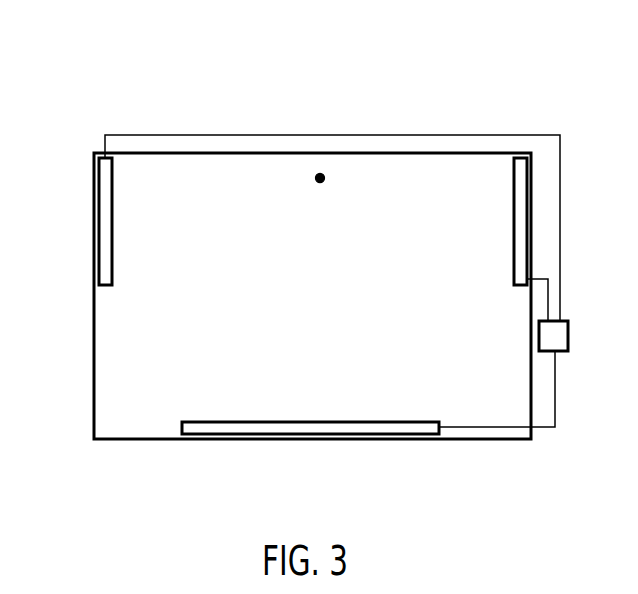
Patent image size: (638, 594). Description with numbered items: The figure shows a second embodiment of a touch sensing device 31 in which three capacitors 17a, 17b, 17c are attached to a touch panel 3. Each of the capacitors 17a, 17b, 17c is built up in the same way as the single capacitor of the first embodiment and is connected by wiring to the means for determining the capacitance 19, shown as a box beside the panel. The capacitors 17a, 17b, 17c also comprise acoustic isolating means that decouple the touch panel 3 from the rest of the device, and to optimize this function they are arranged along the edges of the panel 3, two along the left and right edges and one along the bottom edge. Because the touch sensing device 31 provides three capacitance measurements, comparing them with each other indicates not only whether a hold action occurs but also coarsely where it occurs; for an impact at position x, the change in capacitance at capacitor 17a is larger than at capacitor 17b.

The touch sensing device 31 is at (408, 100).
The capacitor 17a is at (97, 218).
The capacitor 17b is at (408, 435).
The capacitor 17c is at (527, 202).
The means for determining the capacitance 19 is at (568, 336).
The touch panel 3 is at (320, 176).